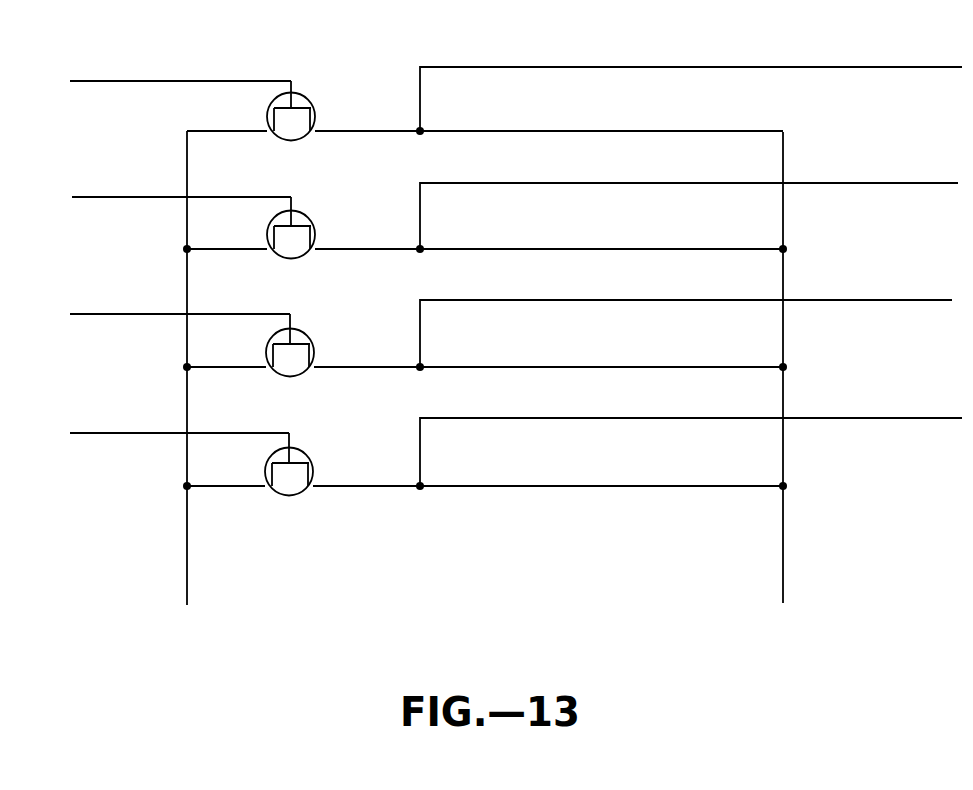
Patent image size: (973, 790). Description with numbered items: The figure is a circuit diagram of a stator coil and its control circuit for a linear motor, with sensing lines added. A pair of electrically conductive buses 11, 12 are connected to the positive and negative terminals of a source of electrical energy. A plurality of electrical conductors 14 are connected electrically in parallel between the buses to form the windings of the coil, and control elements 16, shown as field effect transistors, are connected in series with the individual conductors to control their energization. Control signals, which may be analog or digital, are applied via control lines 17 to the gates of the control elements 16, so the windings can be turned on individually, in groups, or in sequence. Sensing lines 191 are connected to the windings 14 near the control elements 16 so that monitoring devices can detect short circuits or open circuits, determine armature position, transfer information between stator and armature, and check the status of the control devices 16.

The electrically conductive bus 11 is at (186, 159).
The electrically conductive bus 12 is at (784, 222).
The electrical conductors 14 is at (533, 130).
The control elements 16 is at (295, 136).
The control lines 17 is at (177, 80).
The sensing lines 191 is at (871, 67).